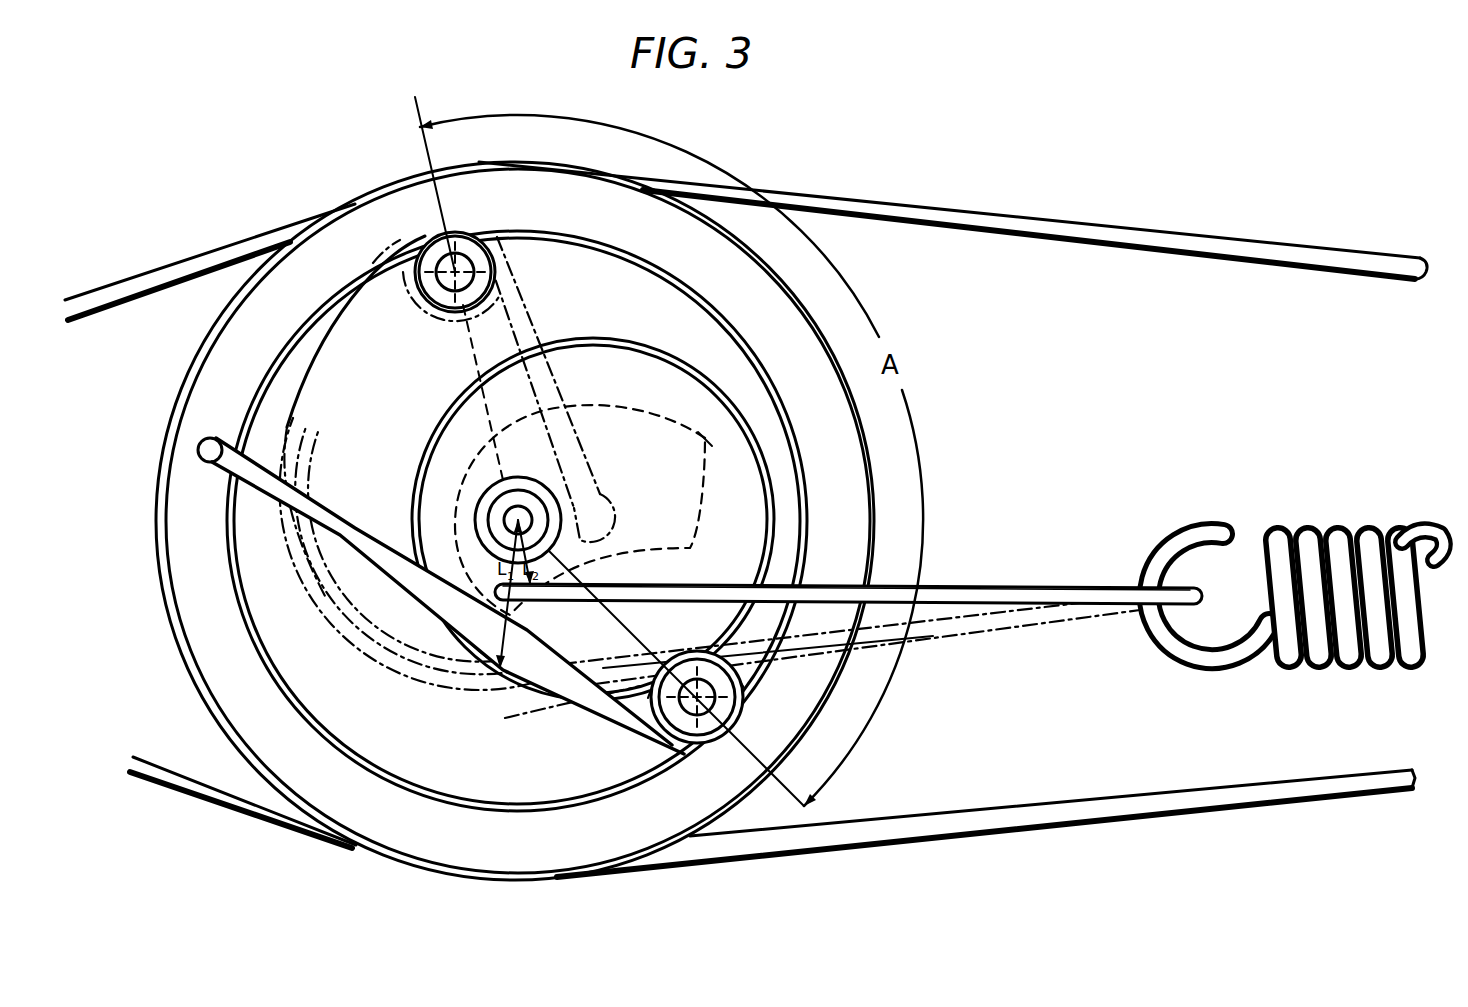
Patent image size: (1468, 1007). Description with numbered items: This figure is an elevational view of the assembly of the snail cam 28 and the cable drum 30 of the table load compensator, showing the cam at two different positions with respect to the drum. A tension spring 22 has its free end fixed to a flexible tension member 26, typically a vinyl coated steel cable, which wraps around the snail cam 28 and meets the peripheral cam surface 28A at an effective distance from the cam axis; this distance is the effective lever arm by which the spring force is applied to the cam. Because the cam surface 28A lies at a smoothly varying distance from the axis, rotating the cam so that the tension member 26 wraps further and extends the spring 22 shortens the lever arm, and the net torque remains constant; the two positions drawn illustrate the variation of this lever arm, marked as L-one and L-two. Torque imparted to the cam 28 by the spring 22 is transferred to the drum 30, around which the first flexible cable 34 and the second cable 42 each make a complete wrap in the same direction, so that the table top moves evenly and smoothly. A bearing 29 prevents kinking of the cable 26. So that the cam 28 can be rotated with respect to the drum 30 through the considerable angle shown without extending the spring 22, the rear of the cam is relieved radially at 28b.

The tension spring 22 is at (1375, 530).
The flexible tension member 26 is at (1033, 583).
The snail cam 28 is at (365, 305).
The peripheral cam surface 28A is at (412, 472).
The radially relieved rear of cam 28b is at (705, 447).
The bearing 29 is at (708, 745).
The drum 30 is at (502, 860).
The first flexible cable 34 is at (178, 264).
The second cable 42 is at (233, 797).